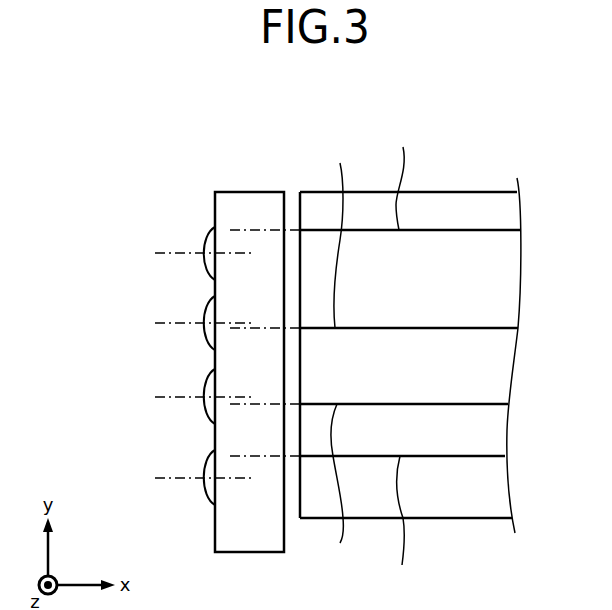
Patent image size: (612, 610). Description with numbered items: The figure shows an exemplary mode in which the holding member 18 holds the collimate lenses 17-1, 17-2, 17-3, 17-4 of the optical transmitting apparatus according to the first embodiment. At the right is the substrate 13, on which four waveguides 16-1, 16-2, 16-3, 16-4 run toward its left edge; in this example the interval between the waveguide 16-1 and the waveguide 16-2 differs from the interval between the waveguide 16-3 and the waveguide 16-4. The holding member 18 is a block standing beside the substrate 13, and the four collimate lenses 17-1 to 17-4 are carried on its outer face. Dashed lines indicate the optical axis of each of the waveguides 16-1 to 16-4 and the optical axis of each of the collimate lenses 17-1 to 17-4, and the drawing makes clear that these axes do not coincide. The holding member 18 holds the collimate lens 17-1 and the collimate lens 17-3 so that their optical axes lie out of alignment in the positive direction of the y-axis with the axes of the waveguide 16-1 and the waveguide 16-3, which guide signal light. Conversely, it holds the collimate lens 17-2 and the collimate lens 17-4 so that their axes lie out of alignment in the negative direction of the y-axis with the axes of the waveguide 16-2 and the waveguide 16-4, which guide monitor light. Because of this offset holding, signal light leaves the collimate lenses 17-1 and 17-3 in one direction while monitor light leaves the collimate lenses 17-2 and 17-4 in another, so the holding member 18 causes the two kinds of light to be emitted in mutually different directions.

The substrate 13 is at (460, 192).
The waveguide 16-1 is at (337, 234).
The waveguide 16-2 is at (402, 176).
The waveguide 16-3 is at (337, 489).
The waveguide 16-4 is at (401, 525).
The collimate lens 17-1 is at (205, 312).
The collimate lens 17-2 is at (205, 243).
The collimate lens 17-3 is at (205, 385).
The collimate lens 17-4 is at (205, 464).
The holding member 18 is at (246, 192).